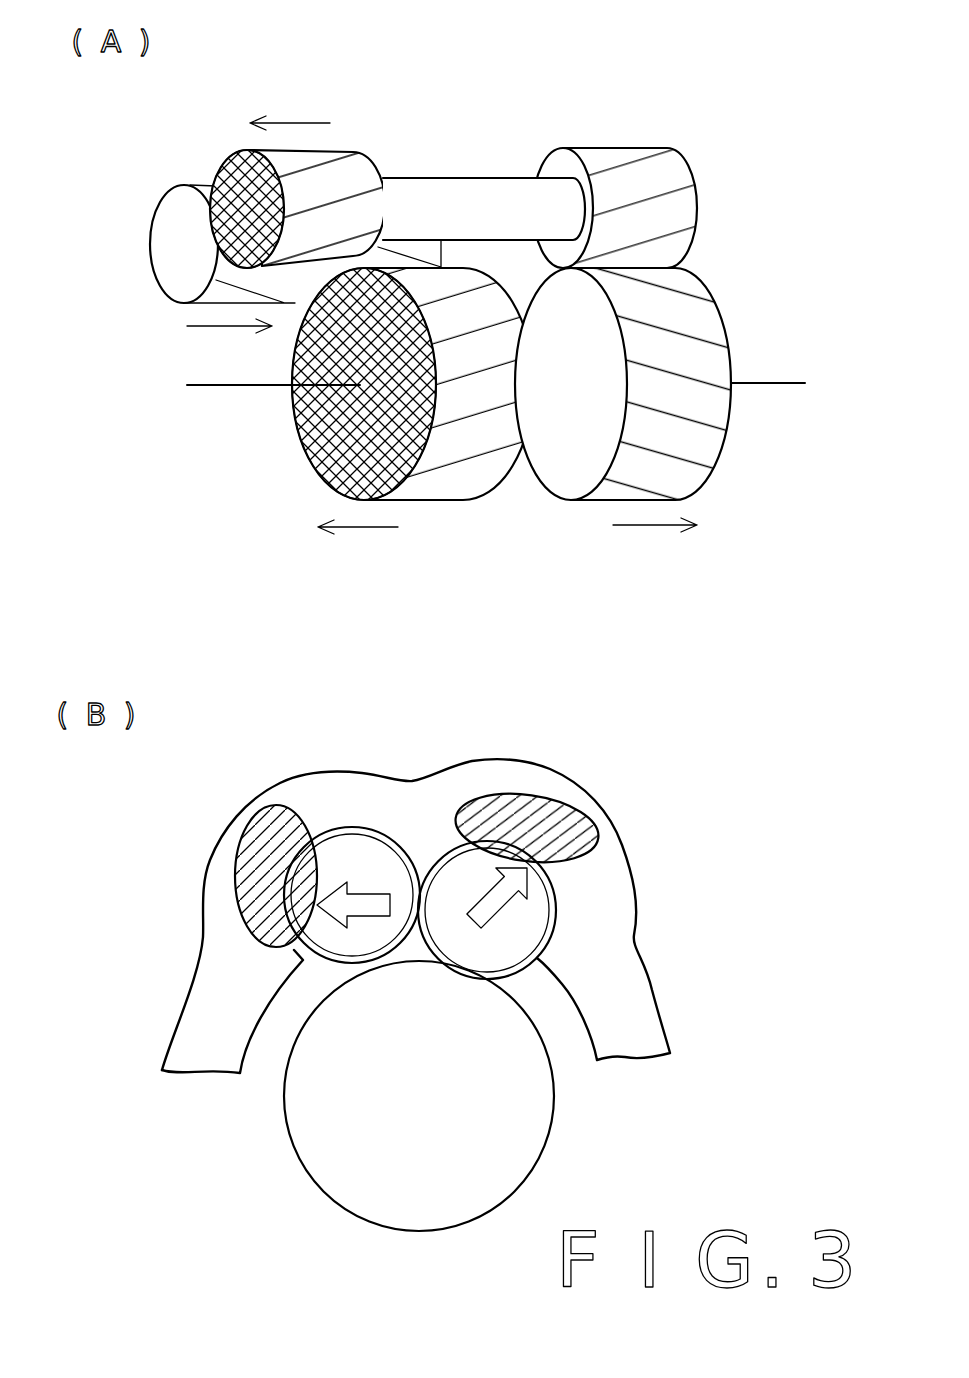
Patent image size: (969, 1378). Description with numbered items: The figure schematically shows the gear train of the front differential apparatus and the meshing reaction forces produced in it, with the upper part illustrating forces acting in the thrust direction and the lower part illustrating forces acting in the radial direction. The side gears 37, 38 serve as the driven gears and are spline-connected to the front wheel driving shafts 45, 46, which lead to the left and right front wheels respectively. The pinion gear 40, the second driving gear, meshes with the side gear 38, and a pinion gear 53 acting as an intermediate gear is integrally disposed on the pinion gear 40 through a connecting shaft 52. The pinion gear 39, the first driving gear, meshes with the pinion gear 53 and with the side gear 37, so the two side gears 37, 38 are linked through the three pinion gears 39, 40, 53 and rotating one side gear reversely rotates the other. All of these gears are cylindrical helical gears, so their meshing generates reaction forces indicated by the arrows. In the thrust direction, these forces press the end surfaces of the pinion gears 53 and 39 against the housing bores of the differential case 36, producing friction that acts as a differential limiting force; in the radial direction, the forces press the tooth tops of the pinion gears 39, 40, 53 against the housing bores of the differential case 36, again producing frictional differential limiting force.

The differential case 36 is at (661, 958).
The side gear 37 is at (434, 487).
The side gear 38 is at (605, 487).
The pinion gear 39 is at (176, 248).
The pinion gear 40 is at (628, 172).
The front wheel driving shaft 45 is at (220, 392).
The front wheel driving shaft 46 is at (770, 380).
The connecting shaft 52 is at (457, 192).
The pinion gear 53 is at (318, 178).